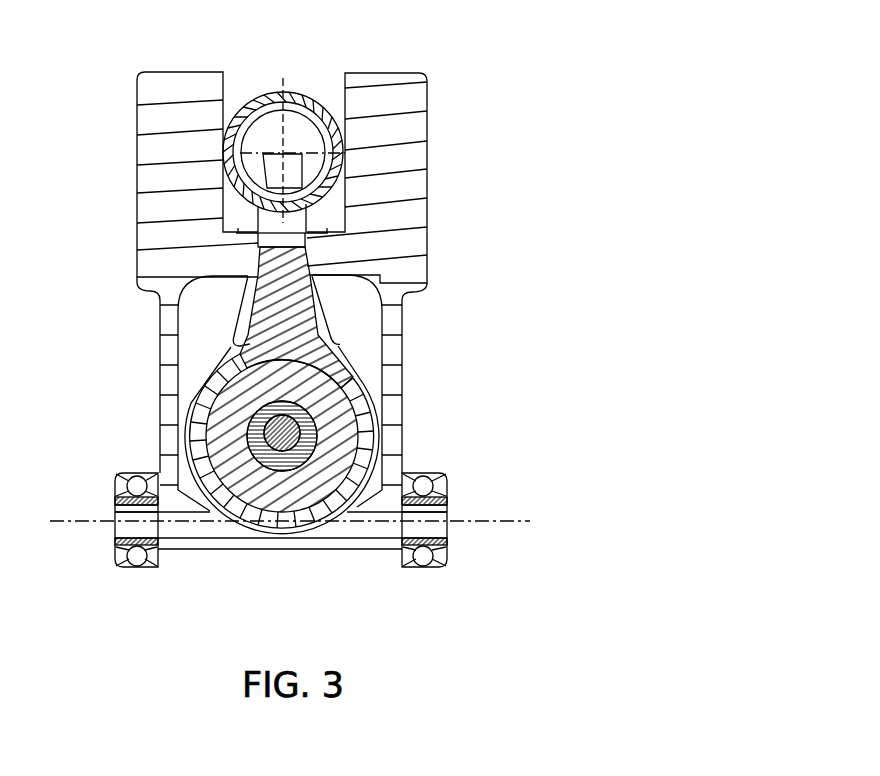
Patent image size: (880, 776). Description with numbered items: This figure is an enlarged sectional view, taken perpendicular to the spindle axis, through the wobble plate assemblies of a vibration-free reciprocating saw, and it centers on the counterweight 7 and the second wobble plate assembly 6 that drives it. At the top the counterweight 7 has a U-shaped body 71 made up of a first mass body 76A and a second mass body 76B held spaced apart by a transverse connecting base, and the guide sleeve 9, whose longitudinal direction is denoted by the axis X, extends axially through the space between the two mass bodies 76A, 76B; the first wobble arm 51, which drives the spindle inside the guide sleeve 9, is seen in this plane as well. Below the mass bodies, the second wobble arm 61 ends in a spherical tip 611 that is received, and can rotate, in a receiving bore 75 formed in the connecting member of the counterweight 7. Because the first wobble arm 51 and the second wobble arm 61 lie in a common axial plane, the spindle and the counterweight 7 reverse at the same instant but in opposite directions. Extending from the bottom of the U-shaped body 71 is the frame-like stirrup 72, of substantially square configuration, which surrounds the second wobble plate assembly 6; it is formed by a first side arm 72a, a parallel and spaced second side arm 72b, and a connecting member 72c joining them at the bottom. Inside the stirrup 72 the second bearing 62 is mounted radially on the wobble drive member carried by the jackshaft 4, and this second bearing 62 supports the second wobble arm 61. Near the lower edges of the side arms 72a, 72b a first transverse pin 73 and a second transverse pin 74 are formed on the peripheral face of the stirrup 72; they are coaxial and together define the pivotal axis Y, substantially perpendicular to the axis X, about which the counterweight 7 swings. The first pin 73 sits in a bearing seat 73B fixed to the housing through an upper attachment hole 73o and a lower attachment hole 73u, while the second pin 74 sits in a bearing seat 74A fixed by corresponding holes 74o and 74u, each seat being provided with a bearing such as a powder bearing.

The counterweight 7 is at (535, 62).
The U-shaped body 71 is at (372, 117).
The guide sleeve 9 is at (273, 113).
The longitudinal direction of the spindle X is at (284, 90).
The first wobble arm 51 is at (293, 175).
The first mass body 76A is at (175, 97).
The second mass body 76B is at (403, 100).
The receiving bore 75 is at (236, 240).
The spherical tip 611 is at (283, 240).
The second wobble arm 61 is at (290, 325).
The second wobble plate assembly 6 is at (366, 347).
The stirrup 72 is at (282, 445).
The first side arm 72a is at (172, 355).
The second side arm 72b is at (395, 356).
The connecting member 72c is at (335, 538).
The second bearing 62 is at (243, 478).
The jackshaft 4 is at (282, 447).
The pivotal axis Y is at (300, 515).
The second transverse pin 74 is at (102, 534).
The upper attachment hole 74o is at (137, 482).
The lower attachment hole 74u is at (135, 557).
The bearing seat 74A is at (118, 553).
The first transverse pin 73 is at (463, 526).
The upper attachment hole 73o is at (423, 484).
The lower attachment hole 73u is at (423, 553).
The bearing seat 73B is at (447, 558).